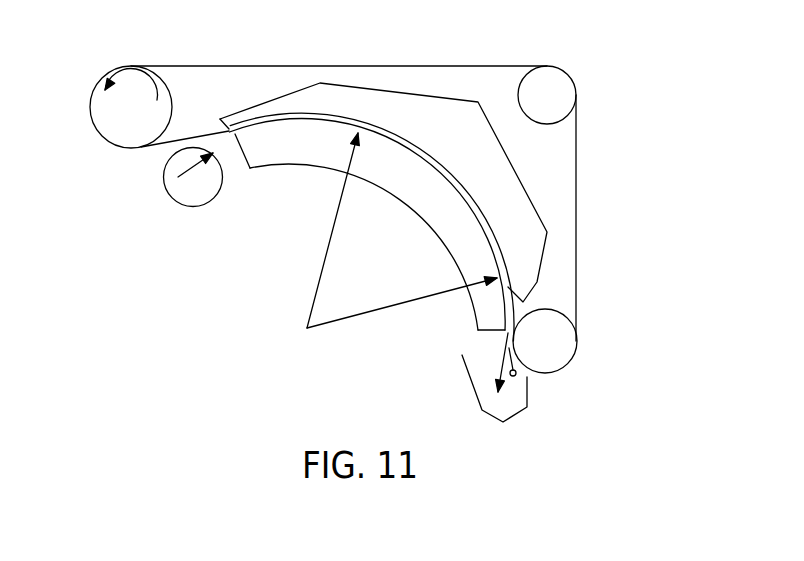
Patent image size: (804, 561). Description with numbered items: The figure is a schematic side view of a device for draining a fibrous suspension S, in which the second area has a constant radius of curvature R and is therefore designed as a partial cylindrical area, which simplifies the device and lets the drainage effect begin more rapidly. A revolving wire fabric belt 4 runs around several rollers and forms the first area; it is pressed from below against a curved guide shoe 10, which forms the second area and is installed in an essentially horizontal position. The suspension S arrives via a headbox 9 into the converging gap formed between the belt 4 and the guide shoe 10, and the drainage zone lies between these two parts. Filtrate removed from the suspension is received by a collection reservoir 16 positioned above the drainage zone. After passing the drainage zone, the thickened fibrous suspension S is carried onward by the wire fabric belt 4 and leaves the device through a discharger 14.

The wire fabric belt 4 is at (226, 66).
The collection reservoir 16 is at (450, 136).
The curved guide shoe 10 is at (297, 148).
The headbox 9 is at (178, 180).
The fibrous suspension S is at (181, 181).
The radius of curvature R is at (323, 257).
The discharger 14 is at (495, 405).